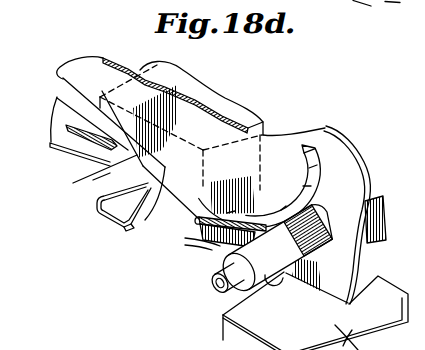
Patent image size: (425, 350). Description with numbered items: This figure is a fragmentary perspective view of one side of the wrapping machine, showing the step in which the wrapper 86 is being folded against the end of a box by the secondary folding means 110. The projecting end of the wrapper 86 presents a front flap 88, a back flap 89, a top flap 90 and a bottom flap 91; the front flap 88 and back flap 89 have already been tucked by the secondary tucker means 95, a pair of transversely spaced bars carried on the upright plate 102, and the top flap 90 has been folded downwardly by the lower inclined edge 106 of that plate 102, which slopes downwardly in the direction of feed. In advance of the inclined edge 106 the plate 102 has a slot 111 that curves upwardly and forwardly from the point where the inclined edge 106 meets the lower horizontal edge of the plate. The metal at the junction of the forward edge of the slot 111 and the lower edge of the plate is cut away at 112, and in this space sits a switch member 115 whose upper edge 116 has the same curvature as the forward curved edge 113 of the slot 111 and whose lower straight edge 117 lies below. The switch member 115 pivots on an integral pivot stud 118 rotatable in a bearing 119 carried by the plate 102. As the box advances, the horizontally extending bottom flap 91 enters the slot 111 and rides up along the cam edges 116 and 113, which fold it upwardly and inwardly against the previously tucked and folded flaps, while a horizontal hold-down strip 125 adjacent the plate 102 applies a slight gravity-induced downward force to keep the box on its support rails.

The wrapper 86 is at (222, 96).
The front flap 88 is at (145, 220).
The back flap 89 is at (84, 162).
The top flap 90 is at (93, 180).
The bottom flap 91 is at (100, 204).
The secondary tucker means 95 is at (63, 128).
The upright plate 102 is at (101, 71).
The lower inclined edge 106 is at (64, 84).
The secondary folding means 110 is at (289, 164).
The slot 111 is at (281, 209).
The cut-away 112 is at (222, 265).
The forward curved edge 113 is at (308, 184).
The switch member 115 is at (195, 247).
The upper edge 116 is at (227, 213).
The lower straight edge 117 is at (200, 234).
The pivot stud 118 is at (212, 290).
The bearing 119 is at (252, 270).
The horizontal strip 125 is at (383, 200).